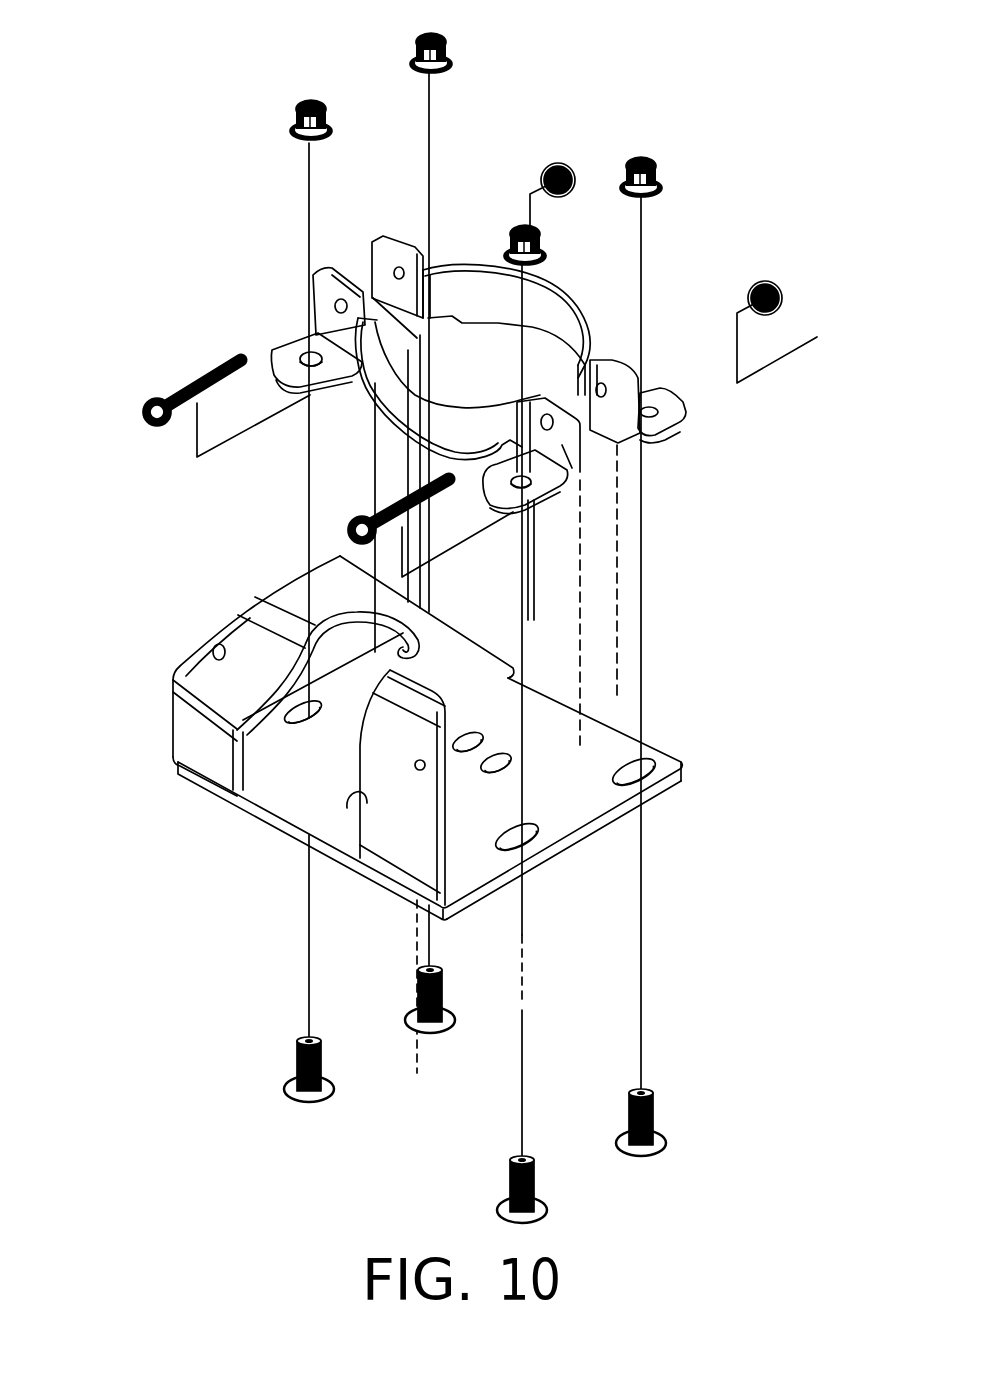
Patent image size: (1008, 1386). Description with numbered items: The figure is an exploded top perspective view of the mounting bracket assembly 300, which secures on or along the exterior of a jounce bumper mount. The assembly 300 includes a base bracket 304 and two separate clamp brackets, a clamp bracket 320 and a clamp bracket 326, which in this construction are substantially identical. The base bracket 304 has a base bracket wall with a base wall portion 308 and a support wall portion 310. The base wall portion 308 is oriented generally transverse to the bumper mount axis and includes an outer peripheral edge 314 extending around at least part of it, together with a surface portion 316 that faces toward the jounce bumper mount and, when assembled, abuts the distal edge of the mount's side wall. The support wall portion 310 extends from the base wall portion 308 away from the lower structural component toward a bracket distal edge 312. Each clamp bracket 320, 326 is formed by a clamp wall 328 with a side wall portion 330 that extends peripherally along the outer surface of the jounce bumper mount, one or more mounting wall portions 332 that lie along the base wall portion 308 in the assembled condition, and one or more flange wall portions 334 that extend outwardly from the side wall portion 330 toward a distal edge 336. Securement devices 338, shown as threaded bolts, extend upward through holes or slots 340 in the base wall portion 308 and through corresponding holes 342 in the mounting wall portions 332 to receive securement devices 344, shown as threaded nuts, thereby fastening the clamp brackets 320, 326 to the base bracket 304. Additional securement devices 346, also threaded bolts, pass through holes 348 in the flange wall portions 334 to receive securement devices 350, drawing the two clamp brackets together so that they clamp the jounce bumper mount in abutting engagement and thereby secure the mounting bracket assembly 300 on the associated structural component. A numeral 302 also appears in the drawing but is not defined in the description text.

The mounting bracket assembly 300 is at (462, 618).
The upright wall 302 is at (483, 737).
The base bracket 304 is at (450, 770).
The base wall portion 308 is at (577, 817).
The support wall portion 310 is at (200, 670).
The bracket distal edge 312 is at (400, 597).
The outer peripheral edge 314 is at (510, 757).
The surface portion 316 is at (463, 870).
The clamp bracket 320 is at (300, 327).
The clamp bracket 326 is at (588, 300).
The clamp wall 328 is at (481, 262).
The side wall portion 330 is at (357, 405).
The mounting wall portion 332 is at (272, 352).
The flange wall portion 334 is at (373, 245).
The distal edge 336 is at (316, 278).
The securement device 338 is at (297, 1066).
The hole or slot 340 is at (673, 793).
The hole 342 is at (303, 380).
The securement device 344 is at (291, 124).
The securement device 346 is at (183, 388).
The hole 348 is at (404, 265).
The securement device 350 is at (560, 163).